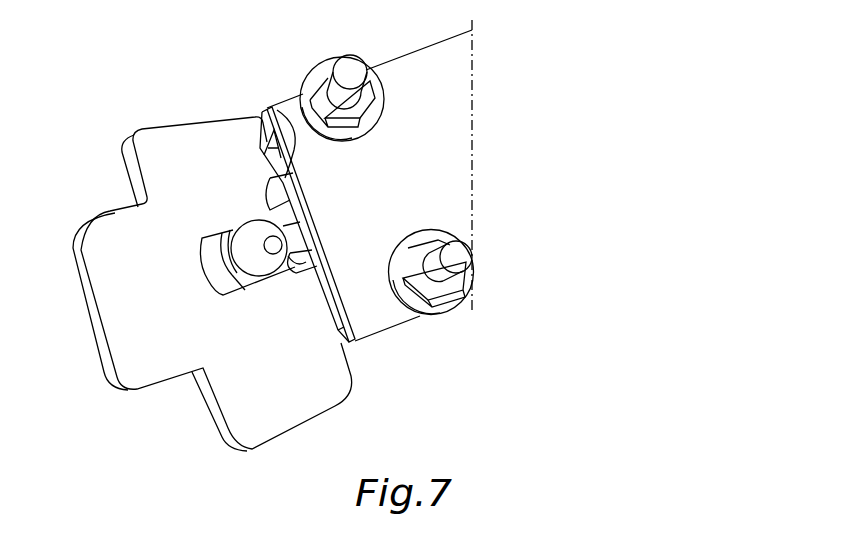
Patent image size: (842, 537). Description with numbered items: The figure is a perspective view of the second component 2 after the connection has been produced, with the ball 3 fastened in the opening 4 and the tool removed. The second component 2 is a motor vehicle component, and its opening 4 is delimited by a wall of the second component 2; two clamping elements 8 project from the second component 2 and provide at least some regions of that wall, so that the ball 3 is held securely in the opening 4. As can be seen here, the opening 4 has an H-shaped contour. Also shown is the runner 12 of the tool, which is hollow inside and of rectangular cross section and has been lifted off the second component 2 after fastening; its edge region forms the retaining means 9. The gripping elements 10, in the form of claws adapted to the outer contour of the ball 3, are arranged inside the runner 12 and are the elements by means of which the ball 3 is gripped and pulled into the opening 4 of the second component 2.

The second component 2 is at (127, 354).
The ball 3 is at (262, 263).
The opening 4 is at (221, 293).
The clamping elements 8 is at (245, 219).
The retaining means 9 is at (338, 340).
The gripping elements 10 is at (298, 152).
The runner 12 is at (377, 317).